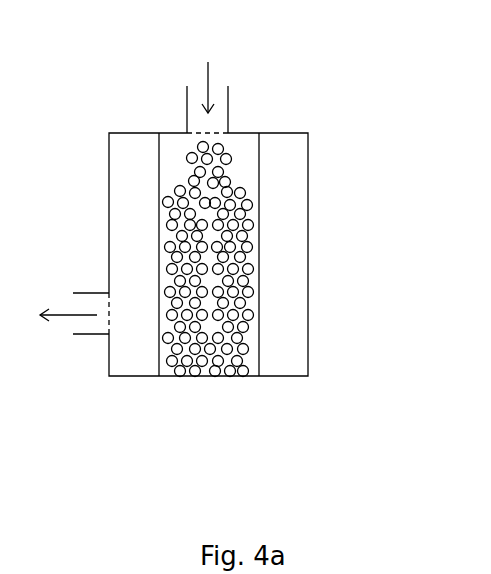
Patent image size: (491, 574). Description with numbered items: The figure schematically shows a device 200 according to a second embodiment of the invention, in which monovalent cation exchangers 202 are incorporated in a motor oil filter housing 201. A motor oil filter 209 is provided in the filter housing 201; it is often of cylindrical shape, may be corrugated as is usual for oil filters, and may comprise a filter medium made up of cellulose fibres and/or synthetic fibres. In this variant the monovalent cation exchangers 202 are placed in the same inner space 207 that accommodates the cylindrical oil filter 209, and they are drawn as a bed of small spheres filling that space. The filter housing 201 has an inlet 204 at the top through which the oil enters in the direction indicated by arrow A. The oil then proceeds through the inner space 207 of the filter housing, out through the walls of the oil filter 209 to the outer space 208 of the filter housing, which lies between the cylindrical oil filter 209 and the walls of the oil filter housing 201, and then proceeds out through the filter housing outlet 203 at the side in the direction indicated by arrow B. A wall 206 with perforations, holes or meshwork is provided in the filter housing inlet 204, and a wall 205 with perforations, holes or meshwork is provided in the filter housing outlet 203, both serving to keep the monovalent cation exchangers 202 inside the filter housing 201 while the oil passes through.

The device 200 is at (331, 194).
The filter housing 201 is at (109, 165).
The monovalent cation exchangers 202 is at (228, 335).
The filter housing outlet 203 is at (92, 334).
The inlet 204 is at (228, 107).
The wall with perforations, holes or meshwork 205 is at (110, 320).
The wall with perforations, holes or meshwork 206 is at (190, 132).
The inner space 207 is at (253, 355).
The outer space 208 is at (148, 198).
The motor oil filter 209 is at (259, 187).